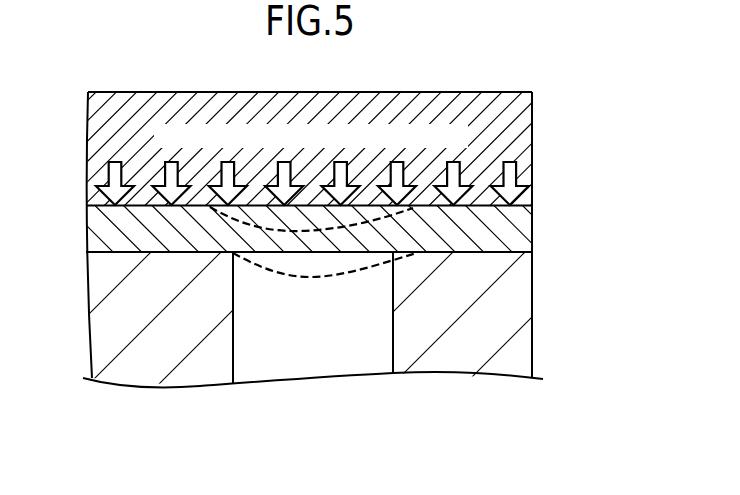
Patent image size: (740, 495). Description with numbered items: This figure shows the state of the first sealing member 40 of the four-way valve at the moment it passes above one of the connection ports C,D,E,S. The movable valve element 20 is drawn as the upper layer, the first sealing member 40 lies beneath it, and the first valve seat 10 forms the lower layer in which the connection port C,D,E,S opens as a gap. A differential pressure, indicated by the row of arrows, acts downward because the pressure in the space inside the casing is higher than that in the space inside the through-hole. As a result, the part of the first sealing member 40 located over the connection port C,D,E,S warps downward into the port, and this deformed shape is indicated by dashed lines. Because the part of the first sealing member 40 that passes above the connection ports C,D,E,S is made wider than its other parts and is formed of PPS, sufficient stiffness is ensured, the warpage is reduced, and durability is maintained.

The first valve seat 10 is at (522, 305).
The movable valve element 20 is at (522, 143).
The first sealing member 40 is at (523, 228).
The connection ports C,D,E,S is at (300, 356).